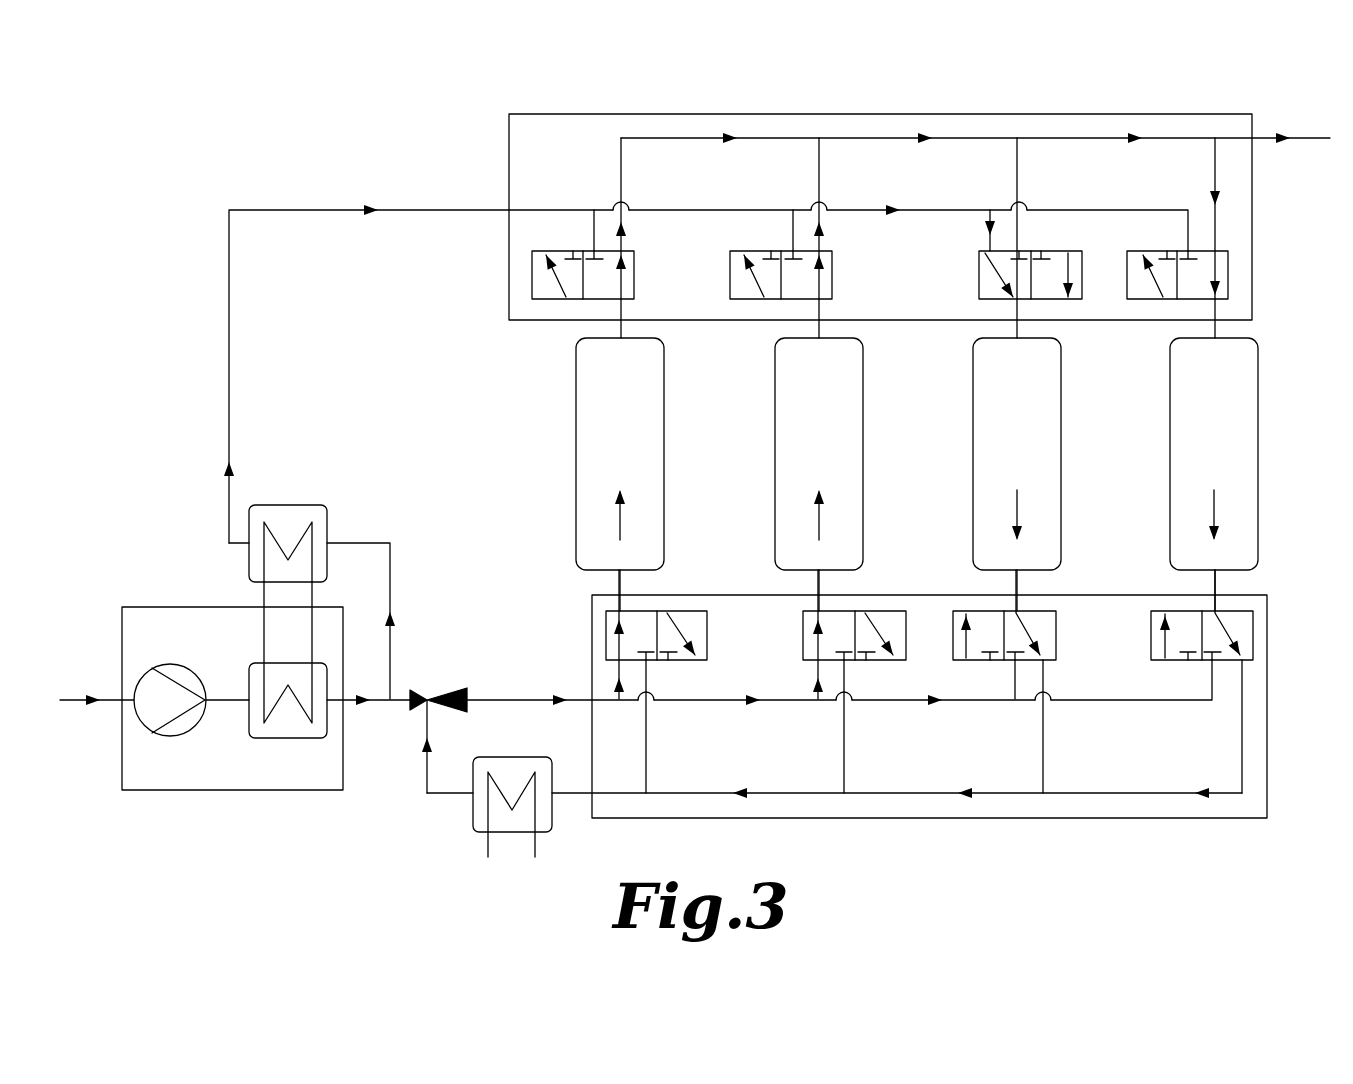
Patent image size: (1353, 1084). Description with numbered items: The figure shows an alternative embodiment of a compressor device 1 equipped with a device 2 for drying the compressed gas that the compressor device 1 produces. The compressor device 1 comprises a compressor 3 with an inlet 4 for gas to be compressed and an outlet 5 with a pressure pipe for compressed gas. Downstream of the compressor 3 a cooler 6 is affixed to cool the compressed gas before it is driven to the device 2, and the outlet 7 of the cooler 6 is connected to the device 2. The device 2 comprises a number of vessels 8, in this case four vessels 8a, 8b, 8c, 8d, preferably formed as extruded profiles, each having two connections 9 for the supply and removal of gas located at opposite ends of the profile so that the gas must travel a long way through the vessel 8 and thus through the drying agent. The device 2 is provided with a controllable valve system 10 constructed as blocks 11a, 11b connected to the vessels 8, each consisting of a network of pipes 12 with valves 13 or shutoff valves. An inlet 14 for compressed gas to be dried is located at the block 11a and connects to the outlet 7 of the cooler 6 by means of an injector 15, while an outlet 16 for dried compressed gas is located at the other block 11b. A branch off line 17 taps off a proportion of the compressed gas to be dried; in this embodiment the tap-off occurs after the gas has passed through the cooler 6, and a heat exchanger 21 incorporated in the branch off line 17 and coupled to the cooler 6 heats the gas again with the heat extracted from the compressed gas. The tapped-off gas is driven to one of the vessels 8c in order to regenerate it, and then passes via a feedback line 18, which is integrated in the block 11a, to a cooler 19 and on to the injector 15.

The compressor device 1 is at (133, 165).
The device for drying compressed gas 2 is at (1308, 785).
The compressor 3 is at (175, 663).
The inlet 4 is at (78, 700).
The outlet 5 is at (220, 700).
The cooler 6 is at (325, 740).
The outlet of the cooler 7 is at (352, 705).
The vessels 8 is at (515, 467).
The vessel 8a is at (588, 412).
The vessel 8b is at (788, 412).
The vessel 8c is at (985, 412).
The vessel 8d is at (1185, 415).
The connections 9 is at (615, 337).
The controllable valve system 10 is at (1265, 312).
The block 11a is at (592, 818).
The block 11b is at (509, 135).
The pipes 12 is at (848, 210).
The valves 13 is at (757, 251).
The inlet 14 is at (592, 699).
The injector 15 is at (427, 690).
The outlet 16 is at (1252, 135).
The branch off line 17 is at (229, 355).
The feedback line 18 is at (910, 793).
The cooler 19 is at (472, 822).
The heat exchanger 21 is at (335, 505).